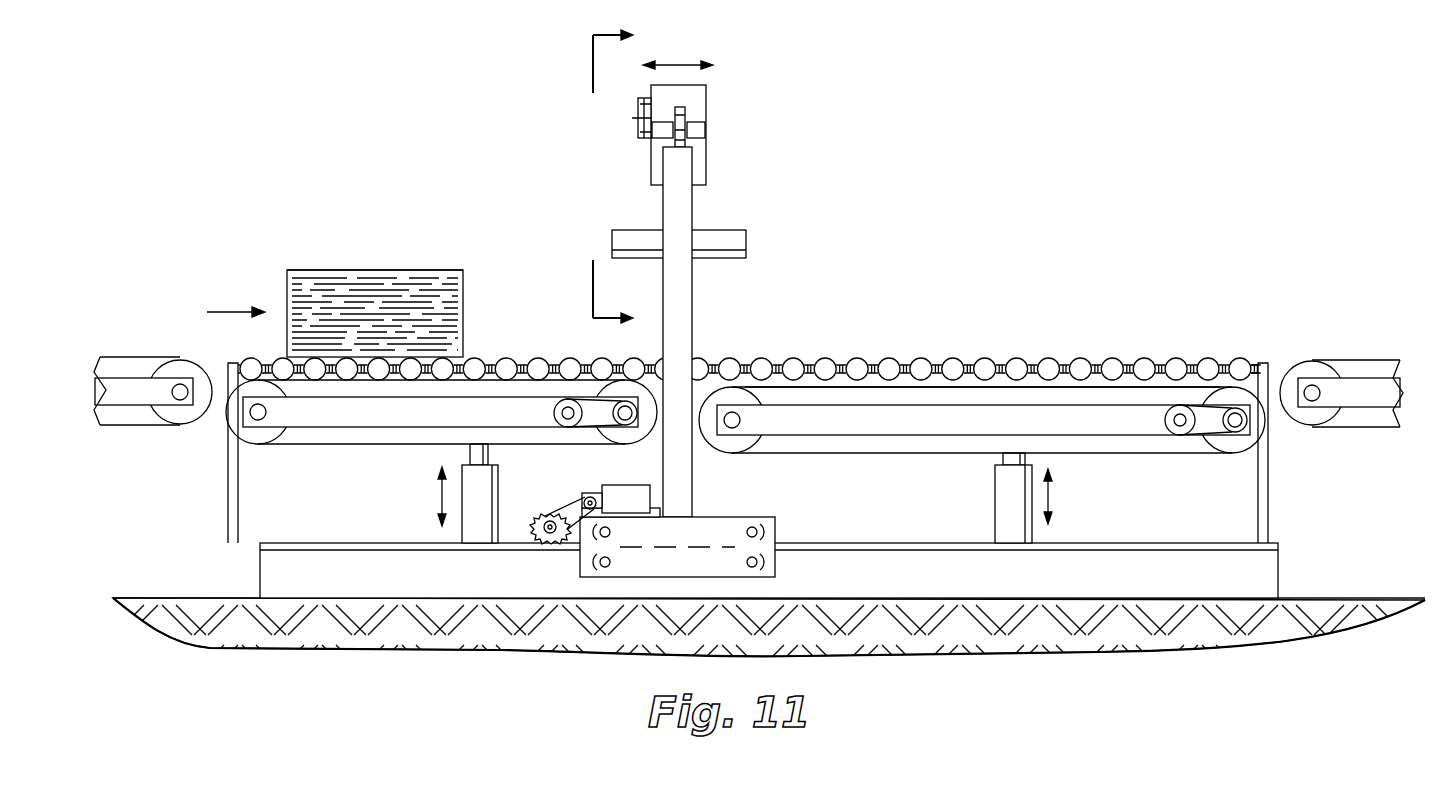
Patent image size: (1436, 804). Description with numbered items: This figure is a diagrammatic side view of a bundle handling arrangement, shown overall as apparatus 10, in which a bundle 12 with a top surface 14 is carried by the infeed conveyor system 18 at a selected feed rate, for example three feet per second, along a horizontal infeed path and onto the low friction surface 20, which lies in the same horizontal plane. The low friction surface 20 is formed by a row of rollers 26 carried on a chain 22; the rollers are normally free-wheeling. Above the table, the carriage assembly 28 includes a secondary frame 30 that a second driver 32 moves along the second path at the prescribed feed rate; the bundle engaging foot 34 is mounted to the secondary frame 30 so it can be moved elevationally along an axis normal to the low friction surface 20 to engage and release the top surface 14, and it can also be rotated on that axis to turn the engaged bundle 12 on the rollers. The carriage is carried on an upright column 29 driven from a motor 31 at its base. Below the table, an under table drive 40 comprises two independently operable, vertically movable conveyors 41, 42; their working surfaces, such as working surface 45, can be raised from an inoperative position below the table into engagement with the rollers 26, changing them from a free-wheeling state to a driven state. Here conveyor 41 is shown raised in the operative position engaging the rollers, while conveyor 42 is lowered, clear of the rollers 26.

The positioning apparatus 10 is at (920, 160).
The bundle 12 is at (420, 270).
The top surface 14 is at (340, 270).
The infeed conveyor system 18 is at (126, 356).
The low friction surface 20 is at (749, 328).
The chain 22 is at (749, 328).
The rollers 26 is at (602, 358).
The carriage assembly 28 is at (689, 123).
The support column 29 is at (677, 210).
The secondary frame 30 is at (700, 106).
The motor 31 is at (625, 505).
The second driver 32 is at (637, 117).
The bundle engaging foot 34 is at (728, 240).
The under table drive 40 is at (738, 460).
The under table conveyor 41 is at (368, 448).
The under table conveyor 42 is at (930, 455).
The working surface 45 is at (1031, 387).